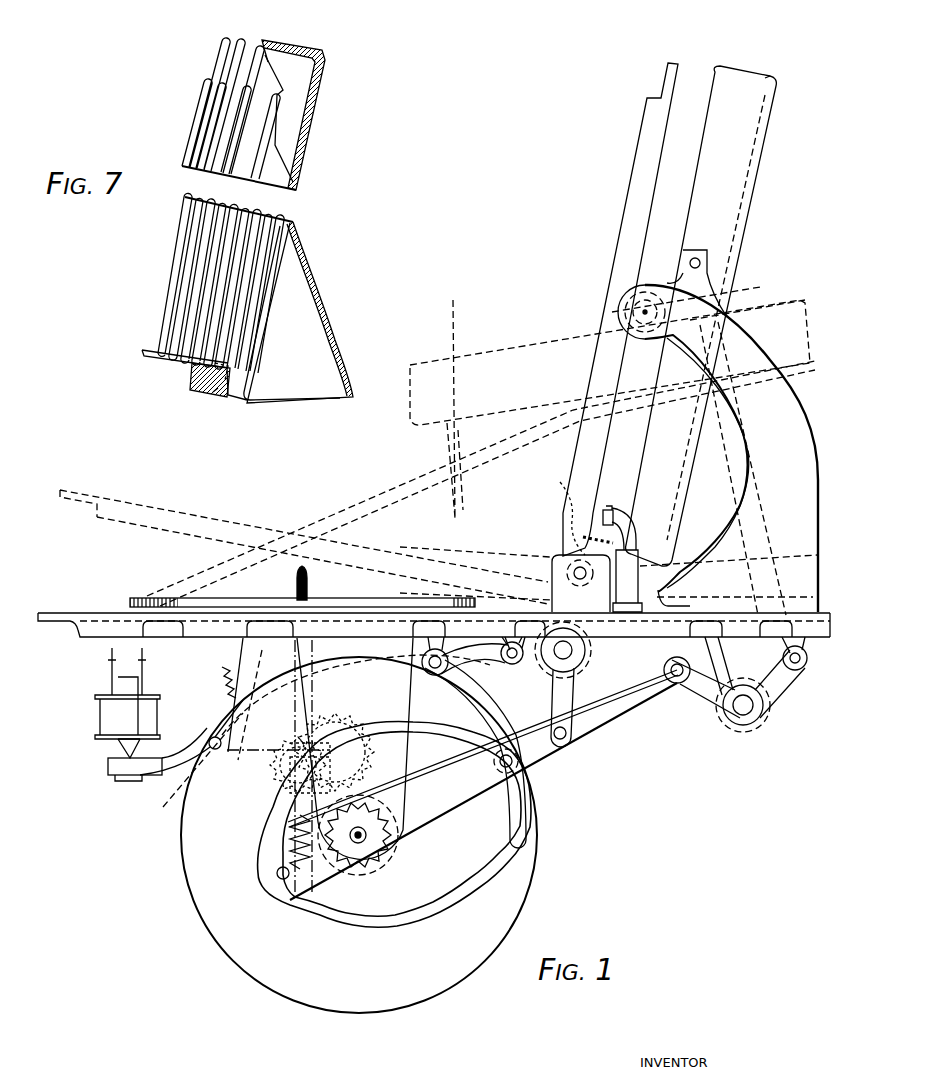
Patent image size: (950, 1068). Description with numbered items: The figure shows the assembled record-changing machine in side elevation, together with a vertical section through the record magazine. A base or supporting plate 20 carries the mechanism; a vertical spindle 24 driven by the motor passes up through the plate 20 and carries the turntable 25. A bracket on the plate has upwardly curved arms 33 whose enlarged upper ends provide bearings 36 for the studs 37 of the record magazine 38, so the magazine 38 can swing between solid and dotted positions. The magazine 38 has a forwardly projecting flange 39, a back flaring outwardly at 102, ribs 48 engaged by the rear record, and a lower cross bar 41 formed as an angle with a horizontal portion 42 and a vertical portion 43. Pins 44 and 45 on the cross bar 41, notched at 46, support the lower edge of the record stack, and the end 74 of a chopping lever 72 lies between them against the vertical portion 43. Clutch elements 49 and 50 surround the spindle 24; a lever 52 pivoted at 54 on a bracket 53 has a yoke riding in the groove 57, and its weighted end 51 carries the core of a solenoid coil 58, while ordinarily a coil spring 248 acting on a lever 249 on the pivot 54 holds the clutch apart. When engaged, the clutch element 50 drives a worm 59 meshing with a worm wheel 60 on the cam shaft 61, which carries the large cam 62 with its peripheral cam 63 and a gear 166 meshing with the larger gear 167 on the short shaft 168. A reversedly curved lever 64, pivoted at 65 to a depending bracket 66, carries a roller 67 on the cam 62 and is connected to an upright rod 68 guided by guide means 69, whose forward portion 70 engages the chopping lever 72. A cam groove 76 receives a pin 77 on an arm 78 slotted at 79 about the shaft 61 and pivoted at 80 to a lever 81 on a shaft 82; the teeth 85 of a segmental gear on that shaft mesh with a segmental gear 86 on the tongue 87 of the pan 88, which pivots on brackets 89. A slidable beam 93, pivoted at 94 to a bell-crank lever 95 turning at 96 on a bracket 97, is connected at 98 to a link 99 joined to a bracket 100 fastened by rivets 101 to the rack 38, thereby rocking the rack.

In FIG. 1, the base or supporting plate 20 is at (60, 612).
In FIG. 1, the spindle 24 is at (310, 585).
In FIG. 1, the turntable 25 is at (200, 600).
In FIG. 1, the arms 33 is at (770, 420).
In FIG. 1, the bearings 36 is at (632, 290).
In FIG. 1, the studs 37 is at (625, 310).
In FIG. 7, the record magazine 38 is at (287, 125).
In FIG. 1, the record magazine 38 is at (725, 208).
In FIG. 7, the forwardly projecting flange 39 is at (296, 48).
In FIG. 1, the forwardly projecting flange 39 is at (740, 72).
In FIG. 7, the cross bar 41 is at (212, 400).
In FIG. 7, the horizontal portion 42 is at (205, 395).
In FIG. 7, the vertical portion 43 is at (228, 380).
In FIG. 7, the pin 44 is at (150, 357).
In FIG. 1, the pin 45 is at (598, 534).
In FIG. 7, the notches 46 is at (160, 350).
In FIG. 1, the notches 46 is at (570, 500).
In FIG. 7, the ribs 48 is at (277, 75).
In FIG. 1, the clutch element 49 is at (280, 775).
In FIG. 1, the clutch element 50 is at (290, 795).
In FIG. 1, the weighted end 51 is at (110, 768).
In FIG. 1, the lever 52 is at (160, 772).
In FIG. 1, the bracket 53 is at (215, 665).
In FIG. 1, the pivot 54 is at (185, 810).
In FIG. 1, the groove 57 is at (350, 722).
In FIG. 1, the solenoid coil 58 is at (107, 720).
In FIG. 1, the worm 59 is at (275, 835).
In FIG. 1, the worm wheel 60 is at (380, 875).
In FIG. 1, the cam shaft 61 is at (370, 840).
In FIG. 1, the cam 62 is at (480, 890).
In FIG. 1, the peripheral cam 63 is at (462, 690).
In FIG. 1, the reversedly curved lever 64 is at (600, 665).
In FIG. 1, the pivot 65 is at (512, 664).
In FIG. 1, the depending bracket 66 is at (513, 618).
In FIG. 1, the roller 67 is at (415, 645).
In FIG. 1, the upright rod 68 is at (630, 532).
In FIG. 1, the guide means 69 is at (665, 605).
In FIG. 1, the forward portion 70 is at (612, 508).
In FIG. 1, the chopping lever 72 is at (618, 512).
In FIG. 7, the end of chopping lever 74 is at (200, 378).
In FIG. 1, the cam groove 76 is at (498, 840).
In FIG. 1, the pin 77 is at (520, 775).
In FIG. 1, the arm 78 is at (422, 808).
In FIG. 1, the slot 79 is at (290, 880).
In FIG. 1, the pivotal connection 80 is at (560, 730).
In FIG. 1, the lever 81 is at (563, 695).
In FIG. 1, the shaft 82 is at (567, 655).
In FIG. 1, the teeth 85 is at (555, 600).
In FIG. 1, the segmental gear 86 is at (555, 580).
In FIG. 1, the tongue 87 is at (690, 580).
In FIG. 1, the pan 88 is at (636, 148).
In FIG. 1, the brackets 89 is at (550, 560).
In FIG. 1, the slidable beam 93 is at (640, 693).
In FIG. 1, the pivotal connection 94 is at (677, 680).
In FIG. 1, the bell-crank lever 95 is at (705, 690).
In FIG. 1, the pivot 96 is at (743, 725).
In FIG. 1, the bracket 97 is at (745, 668).
In FIG. 1, the pivotal connection 98 is at (800, 668).
In FIG. 1, the link 99 is at (760, 582).
In FIG. 1, the bracket 100 is at (710, 285).
In FIG. 1, the screws or rivets 101 is at (735, 290).
In FIG. 7, the flared portion 102 is at (330, 330).
In FIG. 1, the flared portion 102 is at (510, 480).
In FIG. 1, the gear 166 is at (385, 875).
In FIG. 1, the larger gear 167 is at (360, 730).
In FIG. 1, the short shaft 168 is at (325, 772).
In FIG. 1, the coil spring 248 is at (245, 690).
In FIG. 1, the lever 249 is at (252, 700).